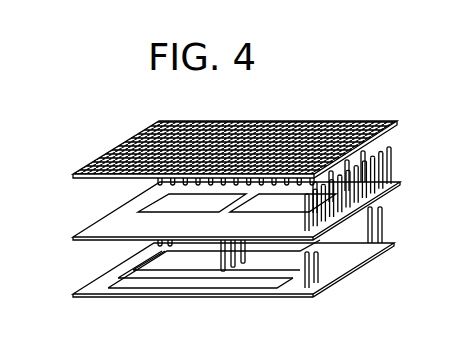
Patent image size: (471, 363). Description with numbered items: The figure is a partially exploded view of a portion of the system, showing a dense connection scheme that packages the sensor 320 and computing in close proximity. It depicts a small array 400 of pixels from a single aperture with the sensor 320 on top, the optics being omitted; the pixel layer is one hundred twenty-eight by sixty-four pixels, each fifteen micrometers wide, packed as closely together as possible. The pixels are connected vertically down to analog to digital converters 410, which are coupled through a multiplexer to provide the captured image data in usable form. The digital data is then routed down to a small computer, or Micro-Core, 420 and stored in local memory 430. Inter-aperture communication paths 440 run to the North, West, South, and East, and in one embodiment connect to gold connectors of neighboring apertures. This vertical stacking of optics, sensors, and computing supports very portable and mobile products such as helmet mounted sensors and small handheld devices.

The small array 400 is at (104, 126).
The sensor 320 is at (332, 86).
The analog to digital (A/D) converters 410 is at (158, 205).
The small computer (Micro-Core) 420 is at (130, 261).
The local memory 430 is at (242, 268).
The communication paths 440 is at (390, 168).